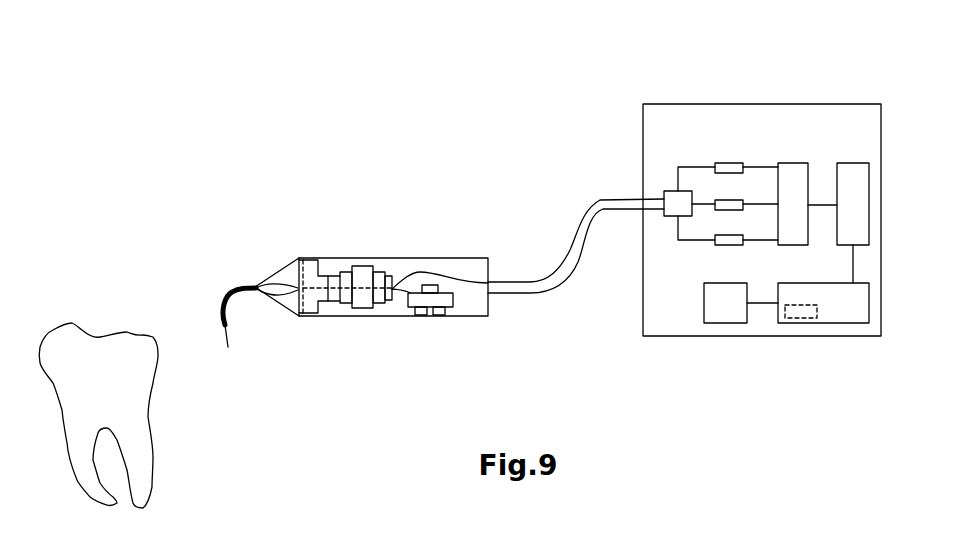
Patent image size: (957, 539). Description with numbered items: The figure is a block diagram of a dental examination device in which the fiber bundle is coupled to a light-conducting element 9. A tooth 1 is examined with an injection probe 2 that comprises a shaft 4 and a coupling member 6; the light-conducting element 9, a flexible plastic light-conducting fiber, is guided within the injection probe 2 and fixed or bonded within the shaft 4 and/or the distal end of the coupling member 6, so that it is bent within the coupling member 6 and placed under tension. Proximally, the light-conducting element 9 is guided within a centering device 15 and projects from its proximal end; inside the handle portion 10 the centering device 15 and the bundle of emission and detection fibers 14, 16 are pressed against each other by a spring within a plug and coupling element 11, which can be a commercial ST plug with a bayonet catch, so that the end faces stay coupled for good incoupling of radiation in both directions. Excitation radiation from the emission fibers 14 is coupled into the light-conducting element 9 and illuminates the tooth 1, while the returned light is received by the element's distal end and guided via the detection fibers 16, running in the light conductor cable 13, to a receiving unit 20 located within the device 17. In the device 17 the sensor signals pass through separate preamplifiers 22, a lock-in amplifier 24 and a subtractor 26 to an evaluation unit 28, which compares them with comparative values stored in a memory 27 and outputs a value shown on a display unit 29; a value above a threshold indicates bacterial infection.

The tooth 1 is at (87, 377).
The injection probe 2 is at (233, 190).
The shaft 4 is at (223, 293).
The coupling member 6 is at (290, 263).
The light-conducting element 9 is at (227, 330).
The handle portion 10 is at (355, 257).
The plug and coupling element 11 is at (369, 308).
The light conductor cable 13 is at (580, 222).
The emission fibers 14 is at (405, 307).
The centering device 15 is at (325, 316).
The detection fibers 16 is at (488, 258).
The device 17 is at (818, 104).
The receiving unit 20 is at (672, 200).
The preamplifiers 22 is at (735, 166).
The lock-in amplifier 24 is at (790, 173).
The subtractor 26 is at (854, 173).
The memory 27 is at (795, 318).
The evaluation unit 28 is at (854, 313).
The display unit 29 is at (717, 312).